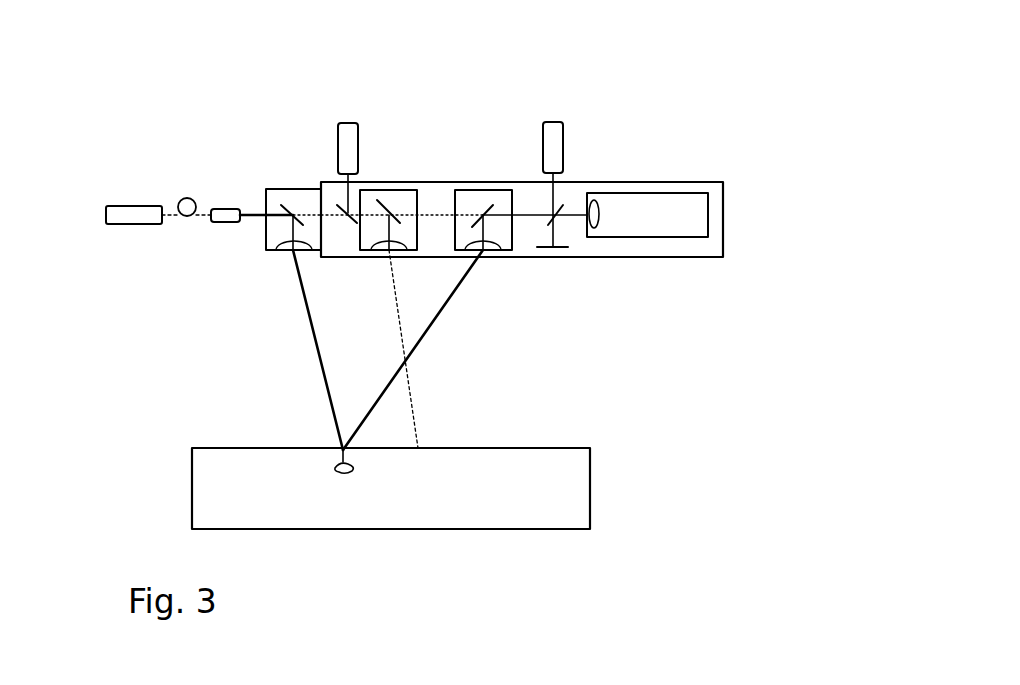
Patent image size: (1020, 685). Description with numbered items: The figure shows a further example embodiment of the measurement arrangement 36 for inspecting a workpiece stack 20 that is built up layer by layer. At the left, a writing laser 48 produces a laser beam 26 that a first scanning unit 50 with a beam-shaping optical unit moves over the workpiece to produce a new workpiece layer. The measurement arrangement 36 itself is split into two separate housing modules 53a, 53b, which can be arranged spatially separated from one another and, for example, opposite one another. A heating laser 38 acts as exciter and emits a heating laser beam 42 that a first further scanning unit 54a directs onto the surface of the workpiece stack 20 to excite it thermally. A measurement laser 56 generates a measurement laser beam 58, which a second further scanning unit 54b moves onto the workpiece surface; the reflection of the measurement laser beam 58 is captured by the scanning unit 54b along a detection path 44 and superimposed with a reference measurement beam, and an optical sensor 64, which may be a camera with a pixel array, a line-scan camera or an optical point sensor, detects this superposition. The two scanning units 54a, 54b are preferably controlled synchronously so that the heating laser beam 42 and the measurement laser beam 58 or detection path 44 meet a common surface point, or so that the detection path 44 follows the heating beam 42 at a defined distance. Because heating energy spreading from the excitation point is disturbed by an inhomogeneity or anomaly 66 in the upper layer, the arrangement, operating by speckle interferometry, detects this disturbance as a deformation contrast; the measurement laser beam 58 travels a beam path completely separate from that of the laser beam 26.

The workpiece stack 20 is at (590, 477).
The laser beam 26 is at (413, 412).
The measurement arrangement 36 is at (688, 113).
The heating laser 38 is at (128, 225).
The heating laser beam 42 is at (318, 360).
The detection path 44 is at (427, 320).
The writing laser 48 is at (343, 122).
The first scanning unit 50 is at (390, 182).
The first housing module 53a is at (227, 270).
The second housing module 53b is at (723, 245).
The first further scanning unit 54a is at (283, 189).
The second further scanning unit 54b is at (485, 190).
The measurement laser 56 is at (552, 120).
The measurement laser beam 58 is at (555, 195).
The optical sensor 64 is at (700, 210).
The inhomogeneity/anomaly 66 is at (347, 474).